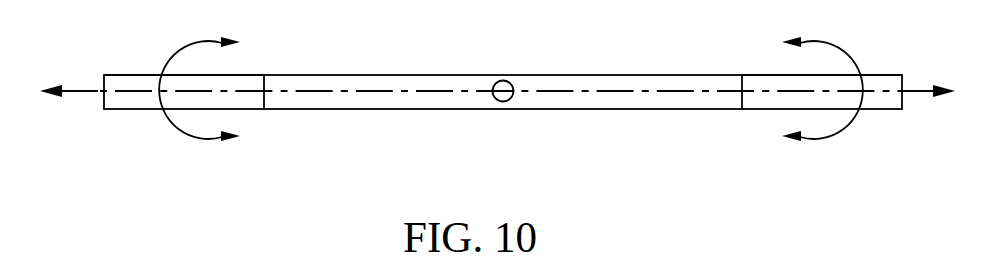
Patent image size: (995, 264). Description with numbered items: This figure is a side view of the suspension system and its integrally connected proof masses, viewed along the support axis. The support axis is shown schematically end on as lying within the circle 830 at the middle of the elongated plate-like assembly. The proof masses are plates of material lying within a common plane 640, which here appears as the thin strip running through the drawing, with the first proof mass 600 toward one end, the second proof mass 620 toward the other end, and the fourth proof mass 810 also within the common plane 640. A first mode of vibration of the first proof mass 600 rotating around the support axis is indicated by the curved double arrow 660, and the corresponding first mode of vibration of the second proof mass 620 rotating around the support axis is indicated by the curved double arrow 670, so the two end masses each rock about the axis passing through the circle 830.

The first proof mass 600 is at (758, 80).
The second proof mass 620 is at (147, 78).
The common plane 640 is at (80, 89).
The curved double arrow 660 is at (837, 127).
The curved double arrow 670 is at (185, 127).
The fourth proof mass 810 is at (612, 80).
The circle 830 is at (504, 102).